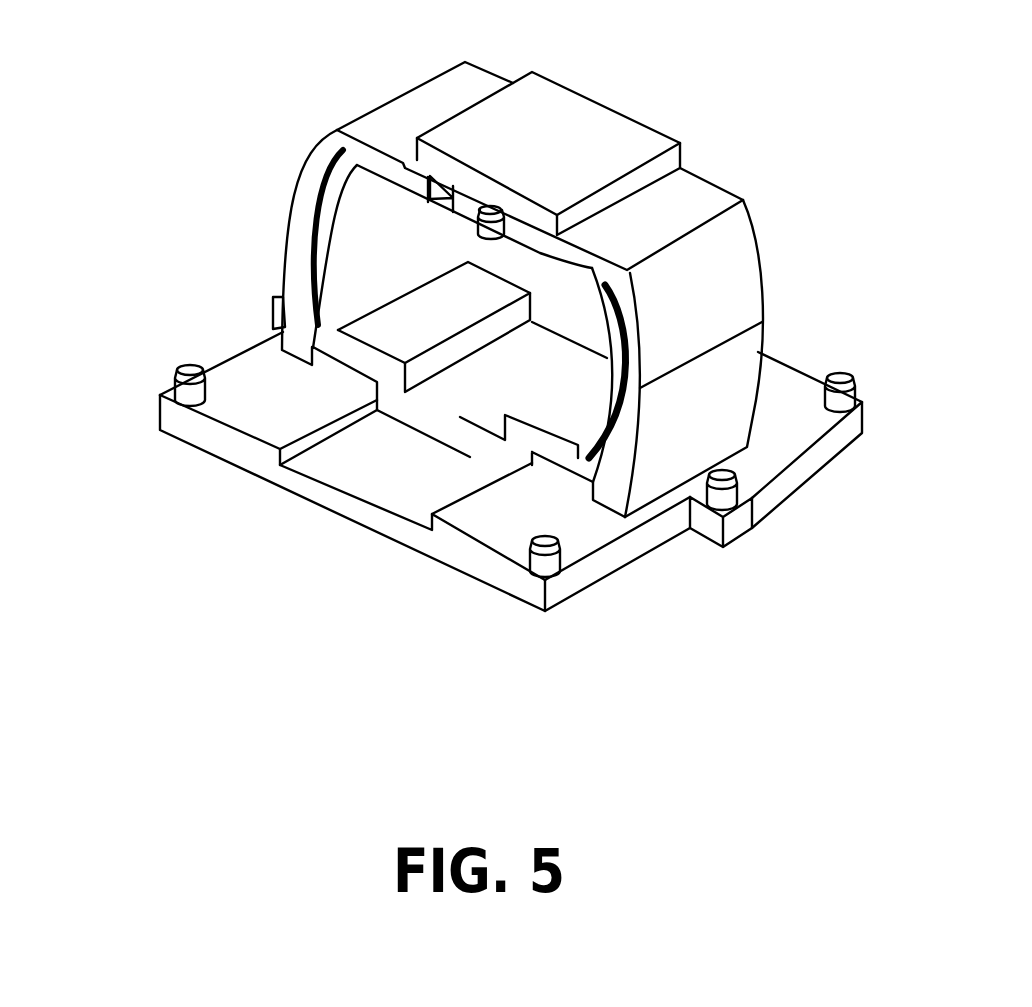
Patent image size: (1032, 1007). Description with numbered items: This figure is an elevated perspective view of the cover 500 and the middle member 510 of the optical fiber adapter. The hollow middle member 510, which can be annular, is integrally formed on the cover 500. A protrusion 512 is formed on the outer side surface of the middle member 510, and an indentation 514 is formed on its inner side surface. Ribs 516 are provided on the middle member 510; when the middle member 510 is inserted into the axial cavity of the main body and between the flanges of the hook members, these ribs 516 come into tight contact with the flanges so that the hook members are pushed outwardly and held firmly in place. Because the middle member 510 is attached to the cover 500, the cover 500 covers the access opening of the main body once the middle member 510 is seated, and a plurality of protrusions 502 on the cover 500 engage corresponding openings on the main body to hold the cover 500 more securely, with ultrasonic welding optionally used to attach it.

The cover 500 is at (233, 488).
The protrusions 502 is at (186, 366).
The middle member 510 is at (337, 134).
The protrusion 512 is at (562, 128).
The indentation 514 is at (468, 183).
The ribs 516 is at (316, 222).